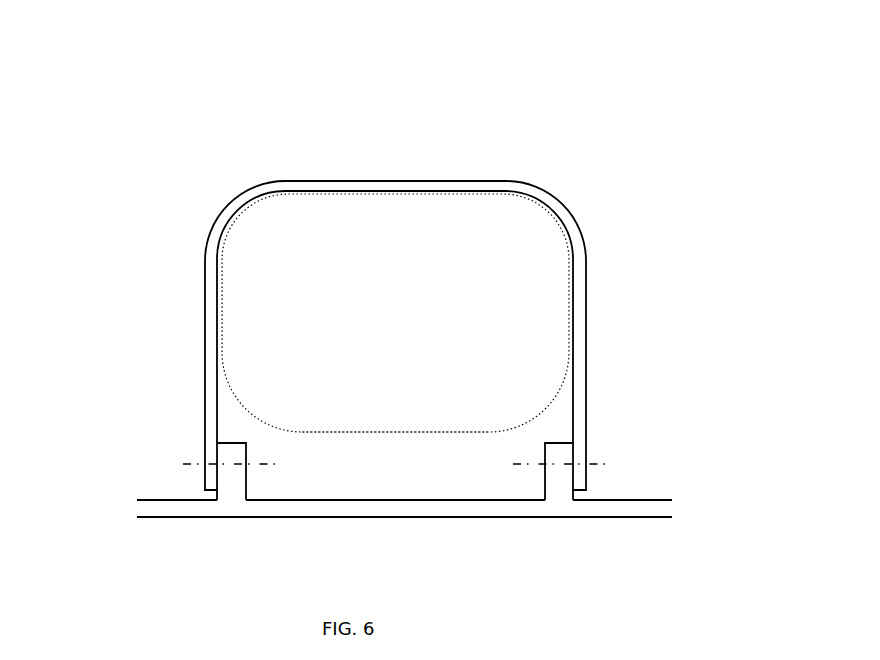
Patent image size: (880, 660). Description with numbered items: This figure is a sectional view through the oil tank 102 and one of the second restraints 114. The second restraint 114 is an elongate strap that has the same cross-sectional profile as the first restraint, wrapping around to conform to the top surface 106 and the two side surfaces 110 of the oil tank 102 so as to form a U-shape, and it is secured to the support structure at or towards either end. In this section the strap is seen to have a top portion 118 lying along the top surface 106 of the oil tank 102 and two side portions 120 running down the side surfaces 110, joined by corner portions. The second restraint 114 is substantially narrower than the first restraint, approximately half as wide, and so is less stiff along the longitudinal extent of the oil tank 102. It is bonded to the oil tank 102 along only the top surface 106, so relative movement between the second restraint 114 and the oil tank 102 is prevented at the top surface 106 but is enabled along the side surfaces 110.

The oil tank 102 is at (413, 316).
The top surface 106 is at (463, 187).
The side surfaces 110 is at (220, 303).
The second restraint 114 is at (557, 207).
The top portion 118 is at (313, 182).
The side portions 120 is at (207, 333).